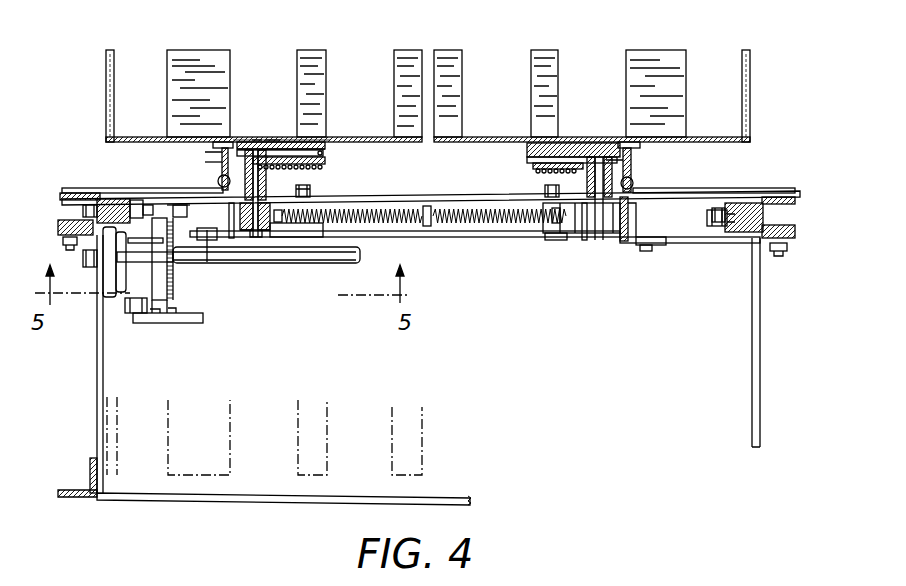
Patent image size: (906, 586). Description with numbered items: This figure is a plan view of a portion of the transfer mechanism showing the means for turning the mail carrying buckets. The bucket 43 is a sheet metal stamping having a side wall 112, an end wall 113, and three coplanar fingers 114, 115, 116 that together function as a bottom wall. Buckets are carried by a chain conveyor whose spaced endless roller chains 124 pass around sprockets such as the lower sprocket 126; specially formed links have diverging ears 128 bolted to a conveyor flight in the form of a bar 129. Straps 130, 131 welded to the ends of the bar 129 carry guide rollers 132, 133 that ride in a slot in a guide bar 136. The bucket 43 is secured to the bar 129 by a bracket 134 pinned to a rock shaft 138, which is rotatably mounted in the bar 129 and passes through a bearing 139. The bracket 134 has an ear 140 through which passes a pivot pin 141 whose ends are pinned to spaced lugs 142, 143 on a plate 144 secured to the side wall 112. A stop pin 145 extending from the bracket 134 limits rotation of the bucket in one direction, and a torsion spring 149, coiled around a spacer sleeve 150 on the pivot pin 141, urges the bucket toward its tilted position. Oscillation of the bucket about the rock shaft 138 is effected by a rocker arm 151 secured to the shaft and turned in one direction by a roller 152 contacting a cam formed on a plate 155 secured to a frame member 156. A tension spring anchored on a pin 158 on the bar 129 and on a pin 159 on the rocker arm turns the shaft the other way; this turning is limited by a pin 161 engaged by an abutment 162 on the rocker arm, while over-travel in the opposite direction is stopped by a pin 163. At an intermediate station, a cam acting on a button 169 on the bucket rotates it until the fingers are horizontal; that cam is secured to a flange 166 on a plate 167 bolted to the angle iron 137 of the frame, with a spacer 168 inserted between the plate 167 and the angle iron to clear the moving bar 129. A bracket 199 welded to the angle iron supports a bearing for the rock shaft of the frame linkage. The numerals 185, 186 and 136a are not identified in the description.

The bucket 43 is at (102, 63).
The end wall 113 is at (107, 80).
The side wall 112 is at (136, 138).
The finger 116 is at (192, 52).
The finger 115 is at (305, 52).
The finger 114 is at (405, 52).
The button 169 is at (228, 148).
The lug 142 is at (256, 144).
The ear 140 is at (272, 140).
The spacer sleeve 150 is at (300, 142).
The torsion spring 149 is at (305, 146).
The plate 144 is at (312, 147).
The lug 143 is at (325, 153).
The pivot pin 141 is at (325, 161).
The bracket 134 is at (270, 176).
The rock shaft 138 is at (311, 191).
The bar 129 is at (392, 200).
The flange 166 is at (634, 182).
The plate 167 is at (150, 190).
The spacer 168 is at (66, 190).
The arm 185 is at (206, 153).
The stop pin 145 is at (206, 165).
The roller 186 is at (218, 181).
The guide roller 132 is at (125, 198).
The guide bar 136 is at (128, 200).
The strap 130 is at (144, 198).
The angle iron 137 is at (58, 194).
The frame member 156 is at (60, 224).
The ear 128 is at (182, 207).
The roller chain 124 is at (176, 250).
The rocker arm 151 is at (232, 240).
The pin 163 is at (215, 232).
The lower sprocket 126 is at (206, 319).
The bearing 139 is at (277, 237).
The abutment 162 is at (330, 234).
The pin 159 is at (318, 225).
The pin 158 is at (428, 227).
The pin 161 is at (552, 242).
The bracket 199 is at (598, 218).
The roller 152 is at (652, 246).
The plate 155 is at (672, 246).
The strap 131 is at (712, 230).
The guide roller 133 is at (725, 228).
The block 136a is at (735, 585).